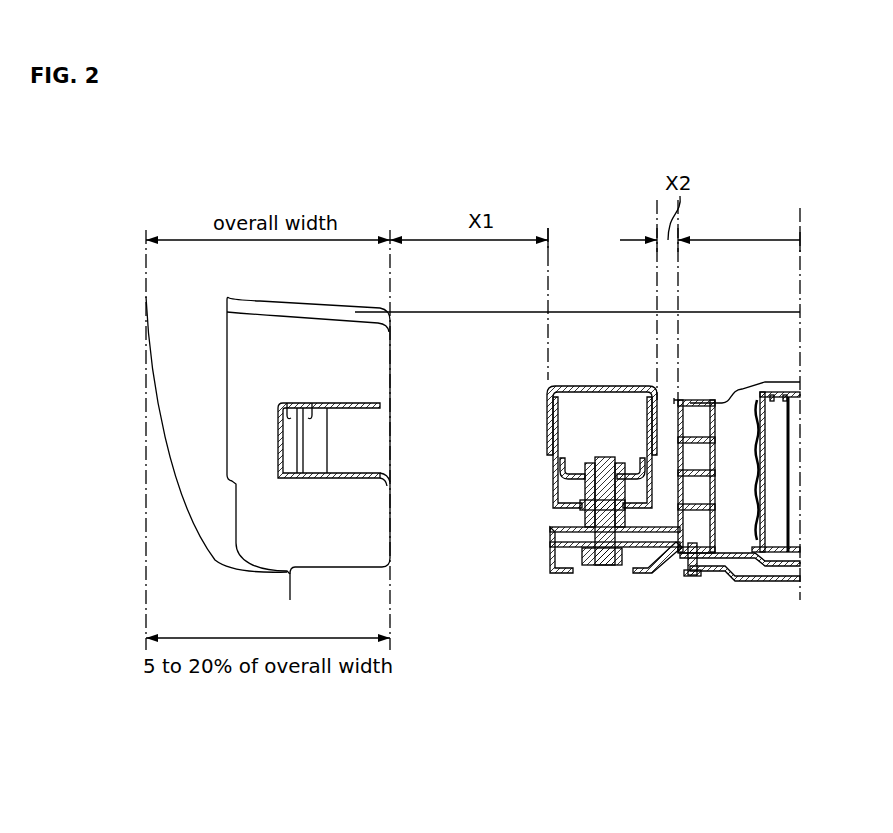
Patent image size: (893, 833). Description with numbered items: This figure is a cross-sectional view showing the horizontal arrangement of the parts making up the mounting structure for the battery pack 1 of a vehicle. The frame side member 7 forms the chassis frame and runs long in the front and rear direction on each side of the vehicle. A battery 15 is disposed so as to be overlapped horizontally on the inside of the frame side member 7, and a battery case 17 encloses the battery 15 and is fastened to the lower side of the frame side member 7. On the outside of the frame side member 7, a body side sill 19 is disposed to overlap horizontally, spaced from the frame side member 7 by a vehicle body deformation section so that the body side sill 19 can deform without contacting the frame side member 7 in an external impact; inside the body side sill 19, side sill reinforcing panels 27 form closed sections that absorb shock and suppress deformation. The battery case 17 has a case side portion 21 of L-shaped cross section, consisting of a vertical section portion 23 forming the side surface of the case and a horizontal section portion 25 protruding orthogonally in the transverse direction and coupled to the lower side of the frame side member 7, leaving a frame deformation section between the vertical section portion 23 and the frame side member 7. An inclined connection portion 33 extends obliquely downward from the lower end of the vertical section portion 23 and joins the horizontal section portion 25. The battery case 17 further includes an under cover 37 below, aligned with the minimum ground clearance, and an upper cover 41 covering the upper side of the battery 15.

The battery pack 1 is at (790, 582).
The frame side member 7 is at (590, 386).
The battery 15 is at (793, 502).
The battery case 17 is at (676, 580).
The body side sill 19 is at (238, 515).
The case side portion 21 is at (638, 565).
The vertical section portion 23 is at (717, 500).
The horizontal section portion 25 is at (550, 575).
The side sill reinforcing panel 27 is at (327, 448).
The inclined connection portion 33 is at (663, 572).
The under cover 37 is at (773, 578).
The upper cover 41 is at (753, 386).